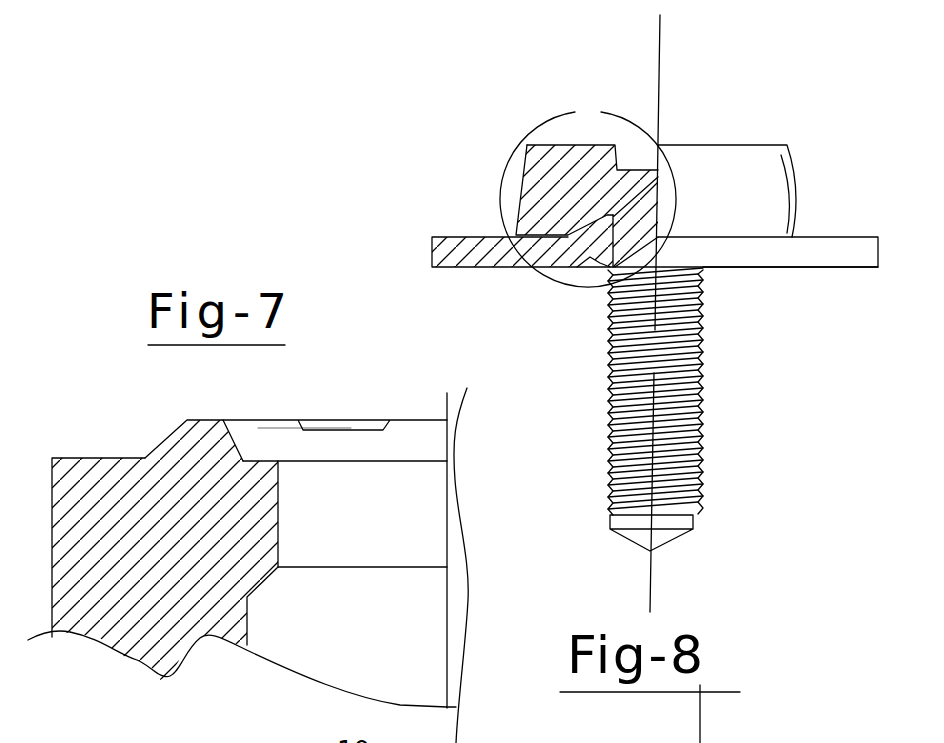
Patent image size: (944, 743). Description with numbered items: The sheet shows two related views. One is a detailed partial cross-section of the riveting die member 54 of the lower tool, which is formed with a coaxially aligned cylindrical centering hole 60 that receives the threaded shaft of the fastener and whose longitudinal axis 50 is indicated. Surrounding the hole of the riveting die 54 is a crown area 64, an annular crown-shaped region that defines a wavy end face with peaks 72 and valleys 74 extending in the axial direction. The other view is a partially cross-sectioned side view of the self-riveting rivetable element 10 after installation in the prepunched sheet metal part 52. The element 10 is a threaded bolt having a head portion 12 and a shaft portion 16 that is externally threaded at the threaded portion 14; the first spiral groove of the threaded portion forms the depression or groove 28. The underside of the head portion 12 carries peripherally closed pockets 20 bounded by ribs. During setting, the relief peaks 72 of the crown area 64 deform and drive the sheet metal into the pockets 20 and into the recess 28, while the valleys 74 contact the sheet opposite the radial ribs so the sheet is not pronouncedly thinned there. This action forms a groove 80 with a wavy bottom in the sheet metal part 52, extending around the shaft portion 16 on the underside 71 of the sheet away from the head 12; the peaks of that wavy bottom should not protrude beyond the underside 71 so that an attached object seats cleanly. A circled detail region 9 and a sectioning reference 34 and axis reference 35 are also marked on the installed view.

In FIG. 8, the circled detail region 9 is at (588, 193).
In FIG. 8, the rivetable element 10 is at (732, 110).
In FIG. 8, the head portion 12 is at (797, 231).
In FIG. 8, the threaded portion 14 is at (703, 402).
In FIG. 8, the shaft portion 16 is at (693, 530).
In FIG. 8, the pockets 20 is at (587, 205).
In FIG. 8, the groove 28 is at (660, 265).
In FIG. 8, the head lip notch 34 is at (624, 166).
In FIG. 8, the longitudinal axis 35 is at (648, 575).
In FIG. 7, the longitudinal axis 50 is at (443, 652).
In FIG. 8, the sheet metal part 52 is at (467, 256).
In FIG. 7, the riveting die member 54 is at (140, 600).
In FIG. 7, the centering hole 60 is at (277, 532).
In FIG. 7, the crown area 64 is at (187, 440).
In FIG. 8, the underside of the sheet metal part 71 is at (810, 271).
In FIG. 7, the peaks 72 is at (417, 420).
In FIG. 7, the valleys 74 is at (351, 428).
In FIG. 8, the groove 80 is at (589, 262).